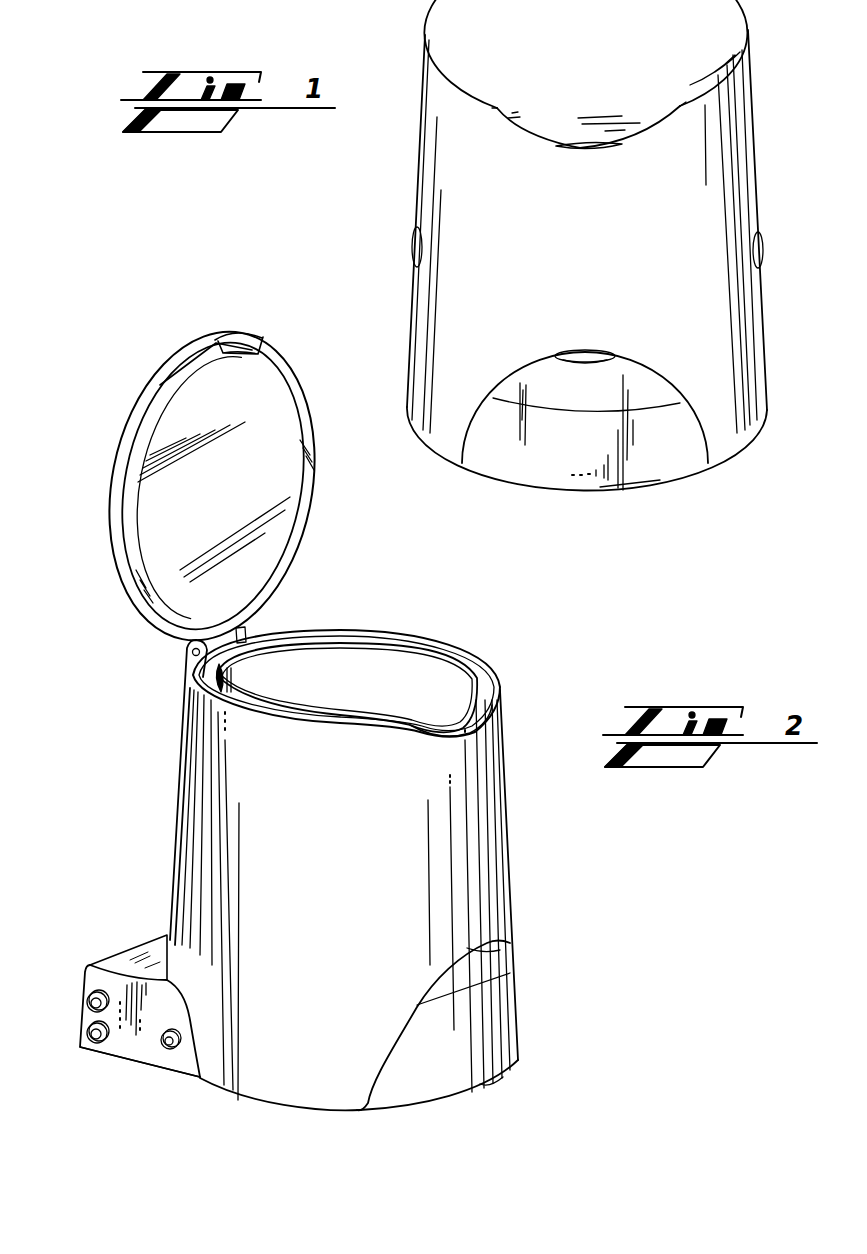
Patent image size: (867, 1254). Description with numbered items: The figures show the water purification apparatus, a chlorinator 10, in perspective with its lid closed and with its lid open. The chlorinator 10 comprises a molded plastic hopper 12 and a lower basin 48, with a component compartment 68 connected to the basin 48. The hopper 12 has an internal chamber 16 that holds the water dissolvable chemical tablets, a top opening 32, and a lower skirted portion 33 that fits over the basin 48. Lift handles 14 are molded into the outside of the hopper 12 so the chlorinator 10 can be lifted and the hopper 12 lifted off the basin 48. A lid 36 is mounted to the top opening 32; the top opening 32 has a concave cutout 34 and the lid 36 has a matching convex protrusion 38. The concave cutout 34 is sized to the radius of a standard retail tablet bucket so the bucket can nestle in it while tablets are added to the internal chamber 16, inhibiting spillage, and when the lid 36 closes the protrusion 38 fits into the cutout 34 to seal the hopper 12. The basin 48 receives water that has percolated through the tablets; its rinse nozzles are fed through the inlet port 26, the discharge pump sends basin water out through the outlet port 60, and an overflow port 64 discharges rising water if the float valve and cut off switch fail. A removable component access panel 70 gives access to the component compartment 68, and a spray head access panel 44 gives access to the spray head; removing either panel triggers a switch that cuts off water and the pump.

In FIG. 2, the chlorinator 10 is at (308, 706).
In FIG. 1, the hopper 12 is at (742, 90).
In FIG. 2, the hopper 12 is at (502, 907).
In FIG. 1, the lift handles 14 is at (412, 232).
In FIG. 2, the internal chamber 16 is at (432, 662).
In FIG. 2, the inlet port 26 is at (88, 998).
In FIG. 2, the top opening 32 is at (307, 633).
In FIG. 1, the lower skirted portion 33 is at (715, 455).
In FIG. 2, the lower skirted portion 33 is at (223, 1080).
In FIG. 1, the concave cutout 34 is at (570, 152).
In FIG. 2, the concave cutout 34 is at (490, 712).
In FIG. 2, the lid 36 is at (131, 582).
In FIG. 1, the convex protrusion 38 is at (647, 126).
In FIG. 2, the convex protrusion 38 is at (218, 333).
In FIG. 1, the spray head access panel 44 is at (630, 370).
In FIG. 2, the spray head access panel 44 is at (508, 965).
In FIG. 1, the basin 48 is at (600, 487).
In FIG. 2, the basin 48 is at (503, 1077).
In FIG. 2, the outlet port 60 is at (167, 1047).
In FIG. 2, the overflow port 64 is at (87, 1034).
In FIG. 2, the component compartment 68 is at (113, 1051).
In FIG. 2, the component access panel 70 is at (138, 953).